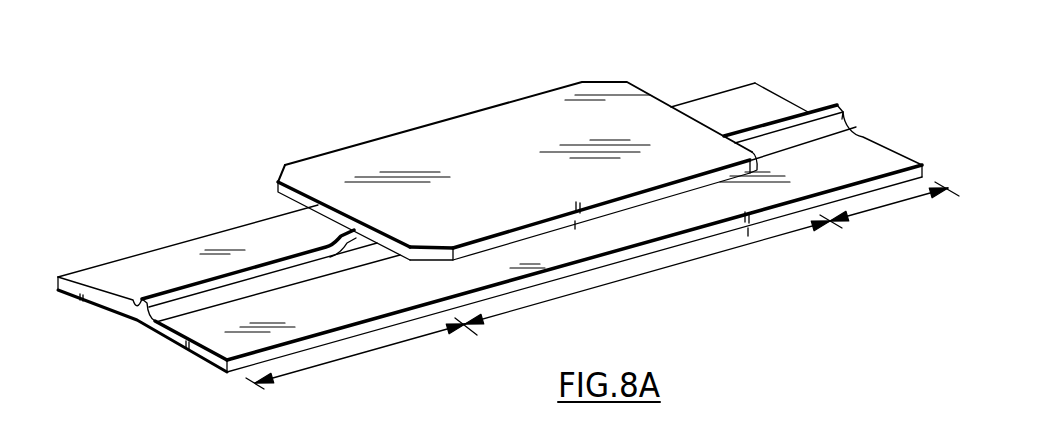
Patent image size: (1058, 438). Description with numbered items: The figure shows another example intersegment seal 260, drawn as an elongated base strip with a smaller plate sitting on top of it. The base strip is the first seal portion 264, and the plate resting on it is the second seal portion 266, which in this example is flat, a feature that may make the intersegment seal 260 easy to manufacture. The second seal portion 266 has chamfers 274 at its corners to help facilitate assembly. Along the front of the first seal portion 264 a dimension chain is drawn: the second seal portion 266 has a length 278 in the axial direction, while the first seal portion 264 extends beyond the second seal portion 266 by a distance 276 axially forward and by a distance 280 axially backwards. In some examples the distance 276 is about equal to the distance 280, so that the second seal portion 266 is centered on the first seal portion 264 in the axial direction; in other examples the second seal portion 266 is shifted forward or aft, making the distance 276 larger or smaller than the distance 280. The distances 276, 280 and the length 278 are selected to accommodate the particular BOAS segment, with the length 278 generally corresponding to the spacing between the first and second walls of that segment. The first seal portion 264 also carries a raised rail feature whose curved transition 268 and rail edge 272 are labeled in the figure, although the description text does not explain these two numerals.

The intersegment seal 260 is at (386, 76).
The first seal portion 264 is at (863, 155).
The second seal portion 266 is at (598, 95).
The rail transition bend 268 is at (342, 236).
The raised rail 272 is at (163, 300).
The chamfers 274 is at (285, 163).
The distance 276 is at (363, 357).
The length 278 is at (662, 270).
The distance 280 is at (888, 206).